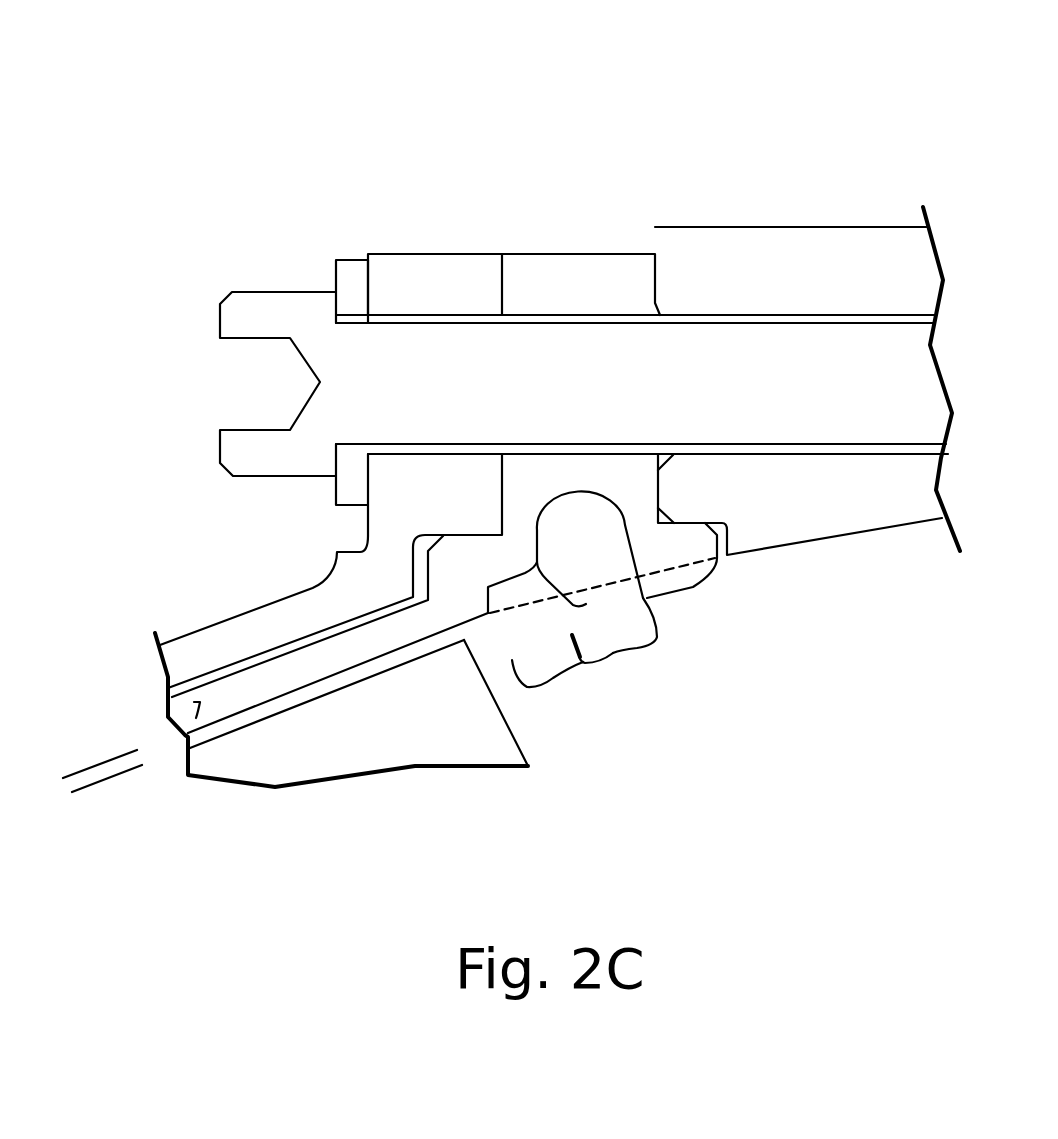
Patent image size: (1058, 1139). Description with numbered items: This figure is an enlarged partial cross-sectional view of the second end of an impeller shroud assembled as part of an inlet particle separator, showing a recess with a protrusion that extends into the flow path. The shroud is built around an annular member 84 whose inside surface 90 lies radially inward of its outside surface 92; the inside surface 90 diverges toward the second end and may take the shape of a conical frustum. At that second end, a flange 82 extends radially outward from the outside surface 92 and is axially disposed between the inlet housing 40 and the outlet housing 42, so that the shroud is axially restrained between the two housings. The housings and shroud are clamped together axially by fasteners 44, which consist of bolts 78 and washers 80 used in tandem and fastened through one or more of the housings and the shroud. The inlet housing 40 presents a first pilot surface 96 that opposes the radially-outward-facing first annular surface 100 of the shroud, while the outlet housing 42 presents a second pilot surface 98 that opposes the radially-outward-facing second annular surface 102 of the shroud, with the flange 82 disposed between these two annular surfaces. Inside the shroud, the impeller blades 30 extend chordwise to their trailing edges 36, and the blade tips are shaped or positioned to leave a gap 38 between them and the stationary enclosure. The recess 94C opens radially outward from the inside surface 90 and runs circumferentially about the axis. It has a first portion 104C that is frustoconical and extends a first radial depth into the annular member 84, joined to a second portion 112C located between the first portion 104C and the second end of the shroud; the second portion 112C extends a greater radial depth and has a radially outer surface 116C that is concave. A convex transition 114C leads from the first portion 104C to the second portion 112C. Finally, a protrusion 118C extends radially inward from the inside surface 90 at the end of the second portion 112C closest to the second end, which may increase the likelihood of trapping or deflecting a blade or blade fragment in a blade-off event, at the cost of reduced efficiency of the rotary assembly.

The fasteners 44 is at (152, 136).
The bolts 78 is at (228, 294).
The washers 80 is at (345, 259).
The inlet housing 40 is at (431, 254).
The flange 82 is at (563, 253).
The outlet housing 42 is at (740, 227).
The first pilot surface 96 is at (331, 531).
The first annular surface 100 is at (478, 532).
The second pilot surface 98 is at (800, 460).
The second annular surface 102 is at (688, 521).
The outside surface 92 is at (238, 672).
The annular member 84 is at (196, 709).
The gap 38 is at (110, 835).
The inside surface 90 is at (232, 712).
The blades 30 is at (412, 737).
The trailing edge 36 is at (522, 751).
The radially outer surface 116C is at (577, 497).
The convex transition 114C is at (602, 605).
The protrusion 118C is at (707, 576).
The second portion 112C is at (623, 652).
The first portion 104C is at (553, 678).
The recess 94C is at (700, 703).